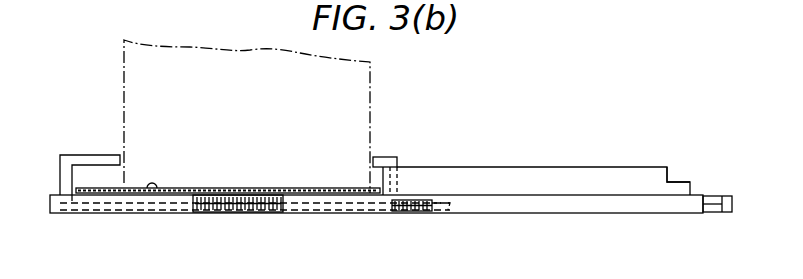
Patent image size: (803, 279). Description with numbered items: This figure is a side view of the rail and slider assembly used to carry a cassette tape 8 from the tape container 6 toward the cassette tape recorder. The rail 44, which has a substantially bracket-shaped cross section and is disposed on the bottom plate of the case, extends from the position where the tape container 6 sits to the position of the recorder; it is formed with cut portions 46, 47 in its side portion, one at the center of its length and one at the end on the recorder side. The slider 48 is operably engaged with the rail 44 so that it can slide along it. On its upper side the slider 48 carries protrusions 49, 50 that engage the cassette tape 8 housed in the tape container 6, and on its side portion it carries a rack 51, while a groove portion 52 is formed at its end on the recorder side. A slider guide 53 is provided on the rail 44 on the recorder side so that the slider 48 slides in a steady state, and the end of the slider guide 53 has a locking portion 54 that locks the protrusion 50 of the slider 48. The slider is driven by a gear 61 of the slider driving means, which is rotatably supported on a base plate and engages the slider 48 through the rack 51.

The cassette tape 8 is at (372, 105).
The tape container 6 is at (158, 185).
The rail 44 is at (718, 196).
The cut portion 46 is at (405, 212).
The cut portion 47 is at (712, 208).
The slider 48 is at (107, 213).
The protrusion 49 is at (98, 158).
The protrusion 50 is at (390, 157).
The rack 51 is at (245, 212).
The groove portion 52 is at (450, 205).
The slider guide 53 is at (585, 170).
The locking portion 54 is at (680, 182).
The gear 61 is at (418, 212).